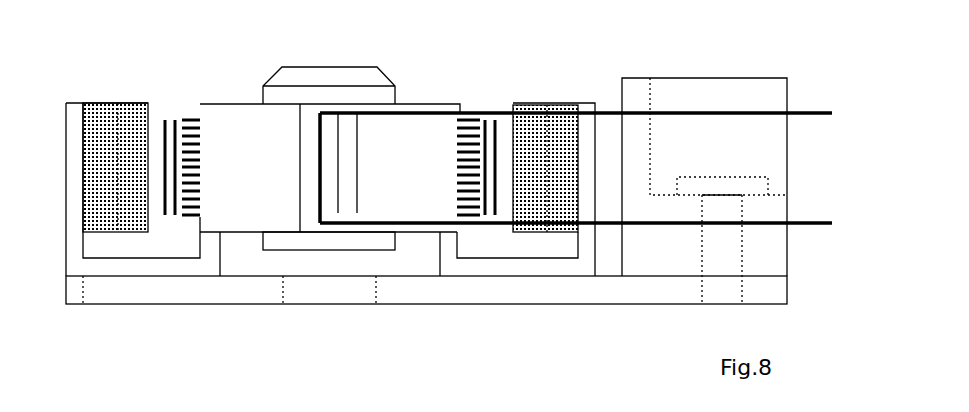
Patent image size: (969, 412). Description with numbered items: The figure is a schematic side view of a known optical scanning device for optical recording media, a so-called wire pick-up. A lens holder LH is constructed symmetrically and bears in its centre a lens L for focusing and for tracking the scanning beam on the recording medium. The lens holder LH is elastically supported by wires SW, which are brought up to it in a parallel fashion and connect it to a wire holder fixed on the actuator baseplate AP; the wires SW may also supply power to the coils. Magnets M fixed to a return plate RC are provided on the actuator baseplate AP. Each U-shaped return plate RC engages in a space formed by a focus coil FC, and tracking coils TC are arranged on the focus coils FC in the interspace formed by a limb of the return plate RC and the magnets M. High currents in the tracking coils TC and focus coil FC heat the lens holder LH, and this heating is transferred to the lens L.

The tracking coil TC is at (487, 108).
The focus coil FC is at (462, 107).
The lens L is at (335, 68).
The wire SW is at (547, 327).
The magnet M is at (98, 233).
The return plate RC is at (185, 268).
The lens holder LH is at (257, 205).
The actuator baseplate AP is at (440, 287).